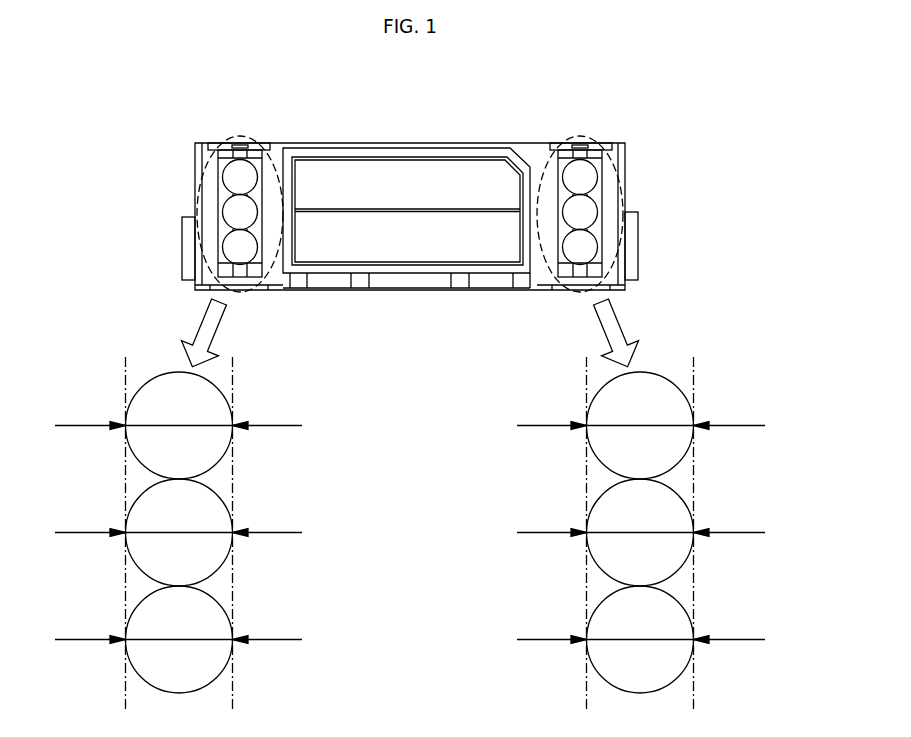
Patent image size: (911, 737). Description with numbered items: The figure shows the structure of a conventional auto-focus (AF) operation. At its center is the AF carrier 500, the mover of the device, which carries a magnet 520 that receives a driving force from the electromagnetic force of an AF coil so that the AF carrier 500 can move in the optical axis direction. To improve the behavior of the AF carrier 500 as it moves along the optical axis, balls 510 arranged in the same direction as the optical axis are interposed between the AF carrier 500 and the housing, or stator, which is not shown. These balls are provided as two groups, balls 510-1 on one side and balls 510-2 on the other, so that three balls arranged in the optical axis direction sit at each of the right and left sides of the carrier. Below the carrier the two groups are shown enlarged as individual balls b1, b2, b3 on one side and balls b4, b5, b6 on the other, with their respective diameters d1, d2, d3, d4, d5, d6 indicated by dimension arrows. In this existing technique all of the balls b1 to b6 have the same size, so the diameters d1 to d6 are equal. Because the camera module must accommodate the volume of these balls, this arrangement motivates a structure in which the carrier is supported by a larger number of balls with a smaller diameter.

The AF carrier 500 is at (363, 134).
The balls 510 is at (409, 214).
The balls 510-1 is at (238, 218).
The balls 510-2 is at (583, 218).
The magnet 520 is at (405, 245).
The ball b1 is at (138, 410).
The ball b2 is at (138, 517).
The ball b3 is at (138, 623).
The ball b4 is at (682, 410).
The ball b5 is at (682, 517).
The ball b6 is at (682, 623).
The diameter d1 is at (178, 415).
The diameter d2 is at (178, 522).
The diameter d3 is at (178, 629).
The diameter d4 is at (641, 415).
The diameter d5 is at (641, 522).
The diameter d6 is at (641, 629).